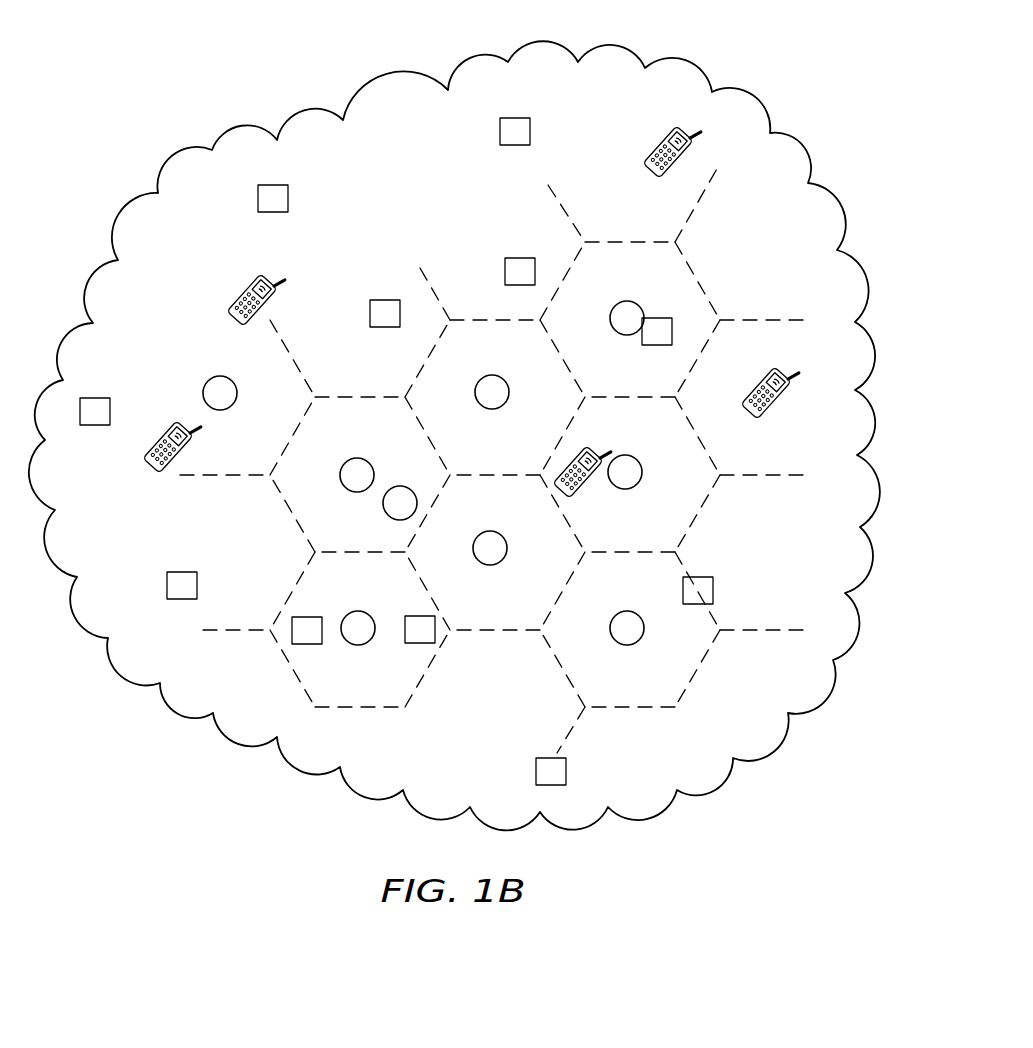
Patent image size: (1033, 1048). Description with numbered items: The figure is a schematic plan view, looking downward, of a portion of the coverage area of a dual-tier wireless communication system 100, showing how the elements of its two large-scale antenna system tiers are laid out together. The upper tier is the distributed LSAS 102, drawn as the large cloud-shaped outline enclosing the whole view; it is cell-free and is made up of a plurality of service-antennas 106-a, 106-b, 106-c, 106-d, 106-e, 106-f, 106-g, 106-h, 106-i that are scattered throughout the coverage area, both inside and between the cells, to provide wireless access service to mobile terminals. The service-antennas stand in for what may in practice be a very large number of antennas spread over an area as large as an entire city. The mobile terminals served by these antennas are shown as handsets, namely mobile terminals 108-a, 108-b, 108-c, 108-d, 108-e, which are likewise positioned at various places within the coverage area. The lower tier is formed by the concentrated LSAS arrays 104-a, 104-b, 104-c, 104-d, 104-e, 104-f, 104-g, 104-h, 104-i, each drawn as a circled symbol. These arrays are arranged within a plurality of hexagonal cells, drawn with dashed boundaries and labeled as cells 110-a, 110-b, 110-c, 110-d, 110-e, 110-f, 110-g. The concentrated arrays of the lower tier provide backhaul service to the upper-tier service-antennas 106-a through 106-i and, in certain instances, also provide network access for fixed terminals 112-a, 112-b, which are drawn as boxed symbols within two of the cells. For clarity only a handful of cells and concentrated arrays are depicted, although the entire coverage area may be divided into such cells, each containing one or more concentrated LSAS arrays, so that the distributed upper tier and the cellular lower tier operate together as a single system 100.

The wireless communication system 100 is at (254, 90).
The distributed LSAS 102 is at (686, 63).
The concentrated LSAS array 104-a is at (222, 376).
The concentrated LSAS array 104-b is at (358, 458).
The concentrated LSAS array 104-c is at (401, 486).
The concentrated LSAS array 104-d is at (359, 611).
The concentrated LSAS array 104-e is at (493, 375).
The concentrated LSAS array 104-f is at (491, 531).
The concentrated LSAS array 104-g is at (629, 301).
The concentrated LSAS array 104-h is at (626, 455).
The concentrated LSAS array 104-i is at (628, 611).
The service-antenna 106-a is at (93, 425).
The service-antenna 106-b is at (258, 199).
The service-antenna 106-c is at (168, 599).
The service-antenna 106-d is at (375, 300).
The service-antenna 106-e is at (420, 643).
The service-antenna 106-f is at (500, 131).
The service-antenna 106-g is at (655, 345).
The service-antenna 106-h is at (713, 590).
The service-antenna 106-i is at (566, 772).
The mobile terminal 108-a is at (166, 428).
The mobile terminal 108-b is at (239, 291).
The mobile terminal 108-c is at (590, 492).
The mobile terminal 108-d is at (650, 152).
The mobile terminal 108-e is at (755, 381).
The cell 110-a is at (295, 497).
The cell 110-b is at (425, 376).
The cell 110-c is at (382, 701).
The cell 110-d is at (492, 608).
The cell 110-e is at (687, 291).
The cell 110-f is at (692, 496).
The cell 110-g is at (679, 672).
The fixed terminal 112-a is at (292, 645).
The fixed terminal 112-b is at (516, 258).